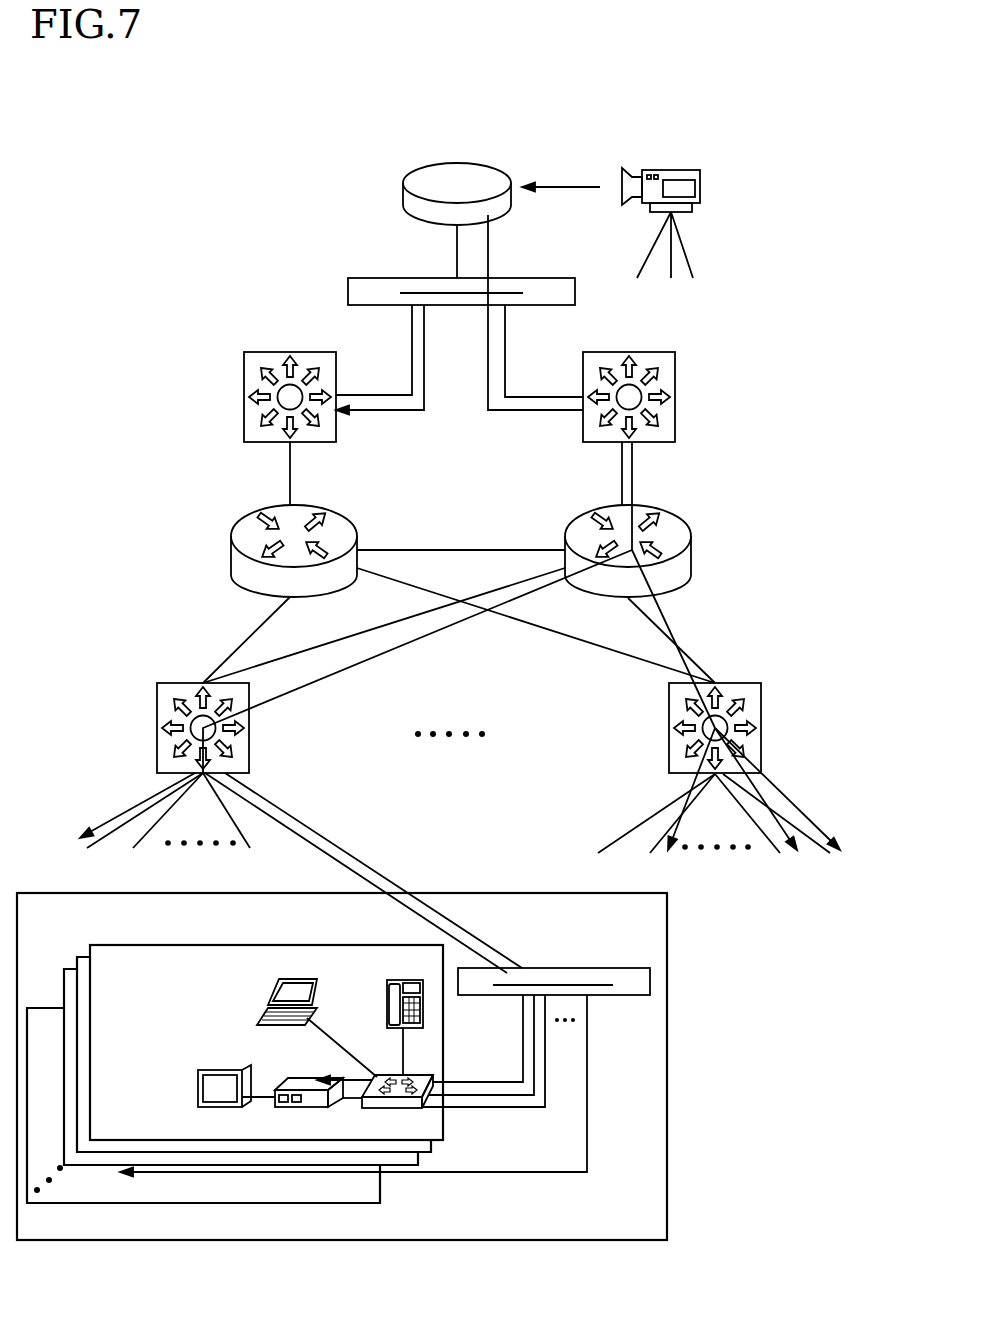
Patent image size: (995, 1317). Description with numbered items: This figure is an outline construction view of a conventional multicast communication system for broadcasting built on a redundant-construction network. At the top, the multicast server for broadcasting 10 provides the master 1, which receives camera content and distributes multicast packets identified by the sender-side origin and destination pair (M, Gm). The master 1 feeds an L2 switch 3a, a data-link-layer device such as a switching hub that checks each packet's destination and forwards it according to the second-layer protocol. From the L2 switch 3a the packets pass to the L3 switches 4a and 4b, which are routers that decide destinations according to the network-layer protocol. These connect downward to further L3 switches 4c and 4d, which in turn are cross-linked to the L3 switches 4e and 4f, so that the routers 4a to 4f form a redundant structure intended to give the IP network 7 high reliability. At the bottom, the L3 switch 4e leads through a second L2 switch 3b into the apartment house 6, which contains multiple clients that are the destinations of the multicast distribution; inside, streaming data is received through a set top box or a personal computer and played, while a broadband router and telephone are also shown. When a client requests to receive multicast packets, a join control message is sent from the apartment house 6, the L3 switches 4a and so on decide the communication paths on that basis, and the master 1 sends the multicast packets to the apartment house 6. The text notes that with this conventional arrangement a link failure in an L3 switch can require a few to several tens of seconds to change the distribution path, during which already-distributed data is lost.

The master 1 is at (441, 162).
The L2 switch 3a is at (575, 294).
The L2 switch 3b is at (558, 968).
The L3 switch 4a is at (244, 373).
The L3 switch 4b is at (675, 378).
The L3 switch 4c is at (232, 529).
The L3 switch 4d is at (690, 553).
The L3 switch 4e is at (157, 715).
The L3 switch 4f is at (761, 703).
The apartment house 6 is at (667, 955).
The IP network 7 is at (655, 471).
The multicast server for broadcasting 10 is at (542, 134).